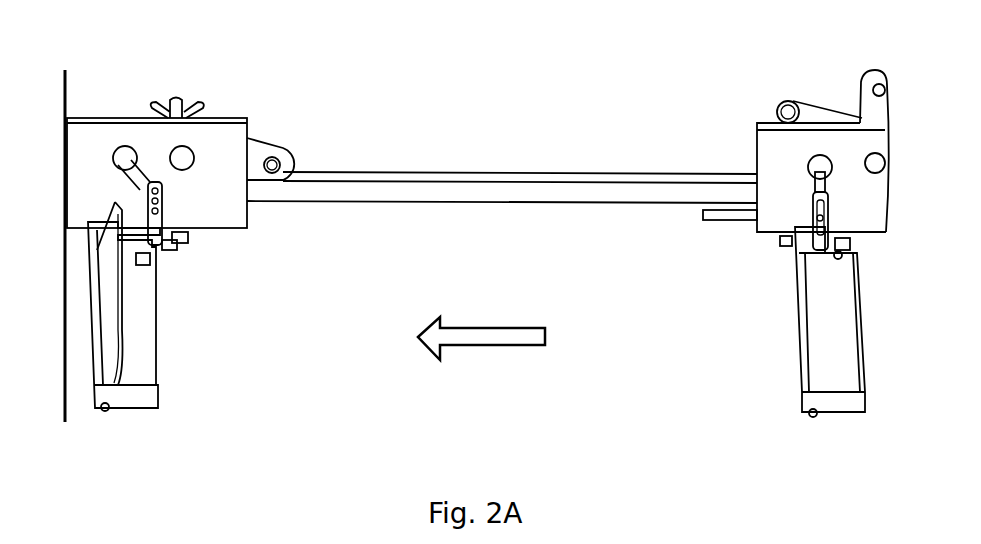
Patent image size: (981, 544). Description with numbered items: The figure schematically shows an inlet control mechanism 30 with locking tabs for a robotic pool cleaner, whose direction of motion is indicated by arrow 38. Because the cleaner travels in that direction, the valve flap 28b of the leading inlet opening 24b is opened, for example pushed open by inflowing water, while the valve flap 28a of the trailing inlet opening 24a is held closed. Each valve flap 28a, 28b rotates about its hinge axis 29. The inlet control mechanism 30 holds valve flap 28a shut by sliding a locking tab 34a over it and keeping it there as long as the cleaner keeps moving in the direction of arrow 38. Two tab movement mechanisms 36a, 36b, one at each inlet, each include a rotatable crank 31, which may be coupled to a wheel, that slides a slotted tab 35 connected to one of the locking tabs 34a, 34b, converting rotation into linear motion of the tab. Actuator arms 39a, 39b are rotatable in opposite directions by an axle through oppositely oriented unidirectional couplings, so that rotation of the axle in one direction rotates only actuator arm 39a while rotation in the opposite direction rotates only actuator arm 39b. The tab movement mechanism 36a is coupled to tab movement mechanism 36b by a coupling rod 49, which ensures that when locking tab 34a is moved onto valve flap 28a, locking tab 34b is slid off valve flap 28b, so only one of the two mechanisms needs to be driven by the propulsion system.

The inlet control mechanism 30 is at (350, 67).
The tab movement mechanism 36a is at (728, 97).
The tab movement mechanism 36b is at (130, 71).
The actuator arm 39a is at (783, 92).
The actuator arm 39b is at (870, 75).
The rotatable crank 31 is at (122, 165).
The slotted tab 35 is at (163, 212).
The locking tab 34a is at (836, 256).
The locking tab 34b is at (176, 243).
The valve flap 28a is at (840, 337).
The valve flap 28b is at (123, 278).
The trailing inlet opening 24a is at (800, 385).
The leading inlet opening 24b is at (157, 335).
The hinge axis 29 is at (110, 408).
The coupling rod 49 is at (467, 203).
The arrow 38 is at (474, 345).